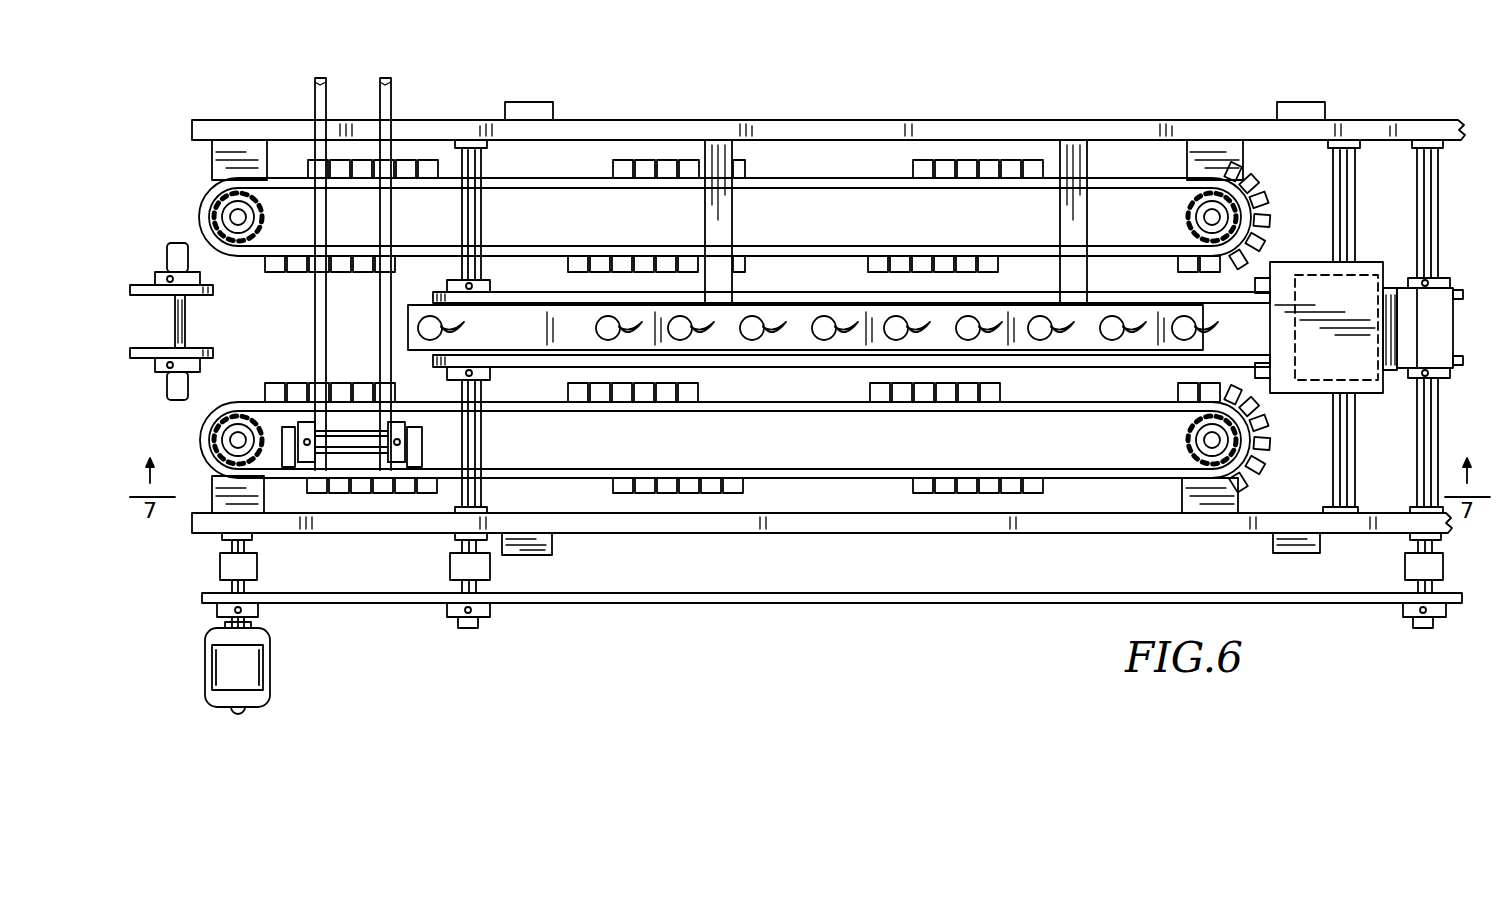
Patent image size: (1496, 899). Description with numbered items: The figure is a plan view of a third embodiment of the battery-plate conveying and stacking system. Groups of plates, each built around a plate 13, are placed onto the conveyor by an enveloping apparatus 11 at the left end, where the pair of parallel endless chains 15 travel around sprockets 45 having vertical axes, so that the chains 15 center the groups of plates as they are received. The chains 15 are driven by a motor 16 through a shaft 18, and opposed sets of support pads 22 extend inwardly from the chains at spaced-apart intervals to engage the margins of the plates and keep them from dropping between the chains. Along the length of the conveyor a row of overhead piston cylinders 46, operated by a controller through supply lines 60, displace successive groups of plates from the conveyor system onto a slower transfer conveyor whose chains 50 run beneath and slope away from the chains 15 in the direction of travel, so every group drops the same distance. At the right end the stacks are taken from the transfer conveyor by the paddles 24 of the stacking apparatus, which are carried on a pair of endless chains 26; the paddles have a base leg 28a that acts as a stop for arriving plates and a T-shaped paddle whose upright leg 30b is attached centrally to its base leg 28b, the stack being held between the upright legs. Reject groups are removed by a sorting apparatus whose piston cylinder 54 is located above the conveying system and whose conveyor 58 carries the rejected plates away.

The enveloping apparatus 11 is at (150, 253).
The plate 13 is at (1288, 378).
The endless chains 15 is at (866, 188).
The motor 16 is at (270, 650).
The shaft 18 is at (247, 585).
The support pads 22 is at (343, 380).
The paddles 24 is at (1285, 258).
The endless chains 26 is at (1466, 293).
The base leg 28a is at (1362, 388).
The base leg 28b is at (1440, 350).
The upright leg 30b is at (1400, 277).
The sprockets 45 is at (240, 244).
The overhead piston cylinders 46 is at (1188, 318).
The chains 50 is at (1140, 366).
The piston cylinder 54 is at (416, 306).
The conveyor 58 is at (358, 80).
The supply lines 60 is at (452, 330).